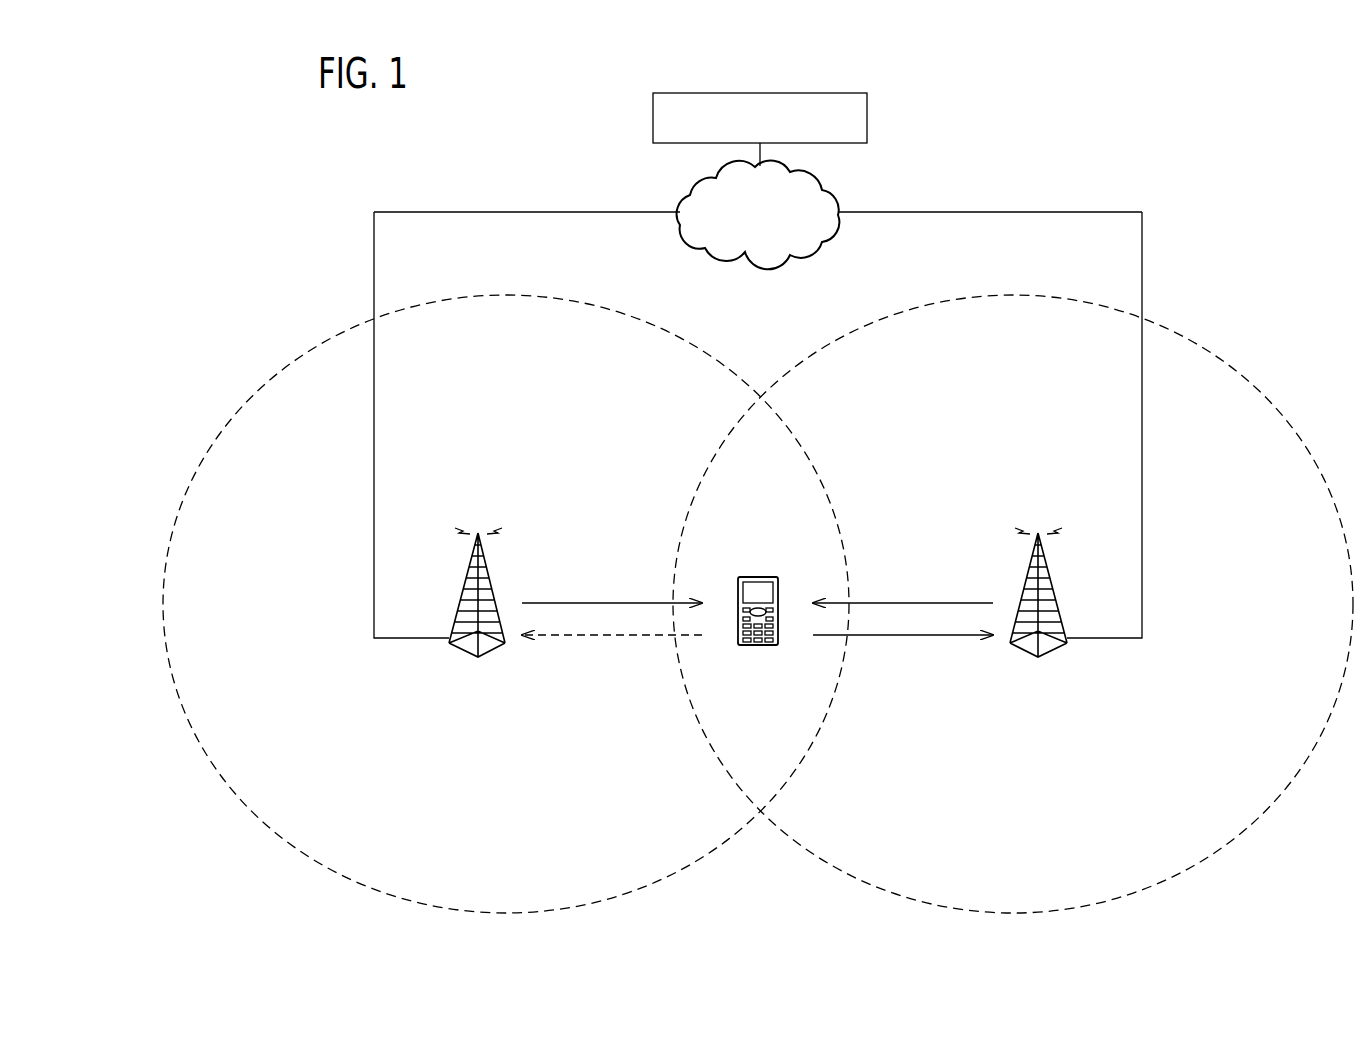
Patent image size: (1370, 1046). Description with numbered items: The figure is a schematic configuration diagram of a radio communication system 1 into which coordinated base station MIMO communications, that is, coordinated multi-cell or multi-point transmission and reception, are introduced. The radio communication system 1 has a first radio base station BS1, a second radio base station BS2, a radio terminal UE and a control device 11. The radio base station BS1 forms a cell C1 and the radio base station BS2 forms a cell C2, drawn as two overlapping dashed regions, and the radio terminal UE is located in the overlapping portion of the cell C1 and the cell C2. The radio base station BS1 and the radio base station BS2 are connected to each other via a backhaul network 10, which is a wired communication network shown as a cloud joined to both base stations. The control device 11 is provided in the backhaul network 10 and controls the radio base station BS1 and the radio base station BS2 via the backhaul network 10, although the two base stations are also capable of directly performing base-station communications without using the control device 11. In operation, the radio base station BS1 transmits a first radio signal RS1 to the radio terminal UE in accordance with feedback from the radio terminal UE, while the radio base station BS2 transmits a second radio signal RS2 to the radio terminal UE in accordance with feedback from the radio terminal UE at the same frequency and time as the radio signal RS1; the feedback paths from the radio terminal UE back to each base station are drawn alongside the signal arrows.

The radio communication system 1 is at (1068, 140).
The backhaul network 10 is at (838, 182).
The control device 11 is at (868, 117).
The radio base station BS1 is at (487, 562).
The radio base station BS2 is at (1047, 562).
The radio terminal UE is at (760, 577).
The cell C1 is at (690, 341).
The cell C2 is at (1198, 341).
The radio signal RS1 is at (612, 588).
The radio signal RS2 is at (903, 588).